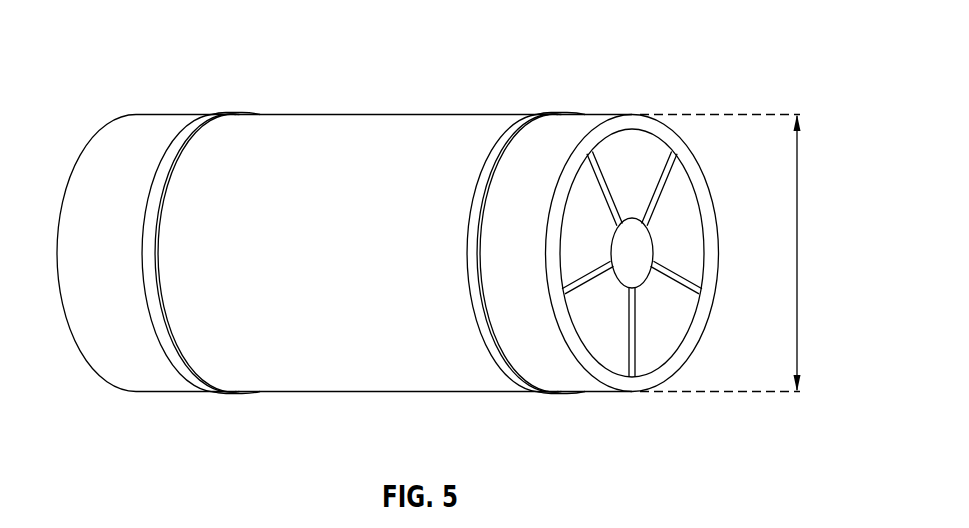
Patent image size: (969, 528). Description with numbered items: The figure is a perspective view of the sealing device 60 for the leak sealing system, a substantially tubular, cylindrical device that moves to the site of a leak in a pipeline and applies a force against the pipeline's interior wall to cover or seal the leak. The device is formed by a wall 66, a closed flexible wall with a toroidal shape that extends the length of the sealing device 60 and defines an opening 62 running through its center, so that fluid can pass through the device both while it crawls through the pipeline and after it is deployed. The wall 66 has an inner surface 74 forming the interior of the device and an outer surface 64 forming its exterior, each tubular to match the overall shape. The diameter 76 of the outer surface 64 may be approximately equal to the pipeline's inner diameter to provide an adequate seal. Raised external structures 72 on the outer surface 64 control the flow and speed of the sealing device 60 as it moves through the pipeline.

The sealing device 60 is at (124, 44).
The opening 62 is at (673, 228).
The outer surface 64 is at (431, 130).
The wall 66 is at (710, 256).
The external structures 72 is at (168, 356).
The inner surface 74 is at (666, 353).
The diameter 76 is at (797, 253).